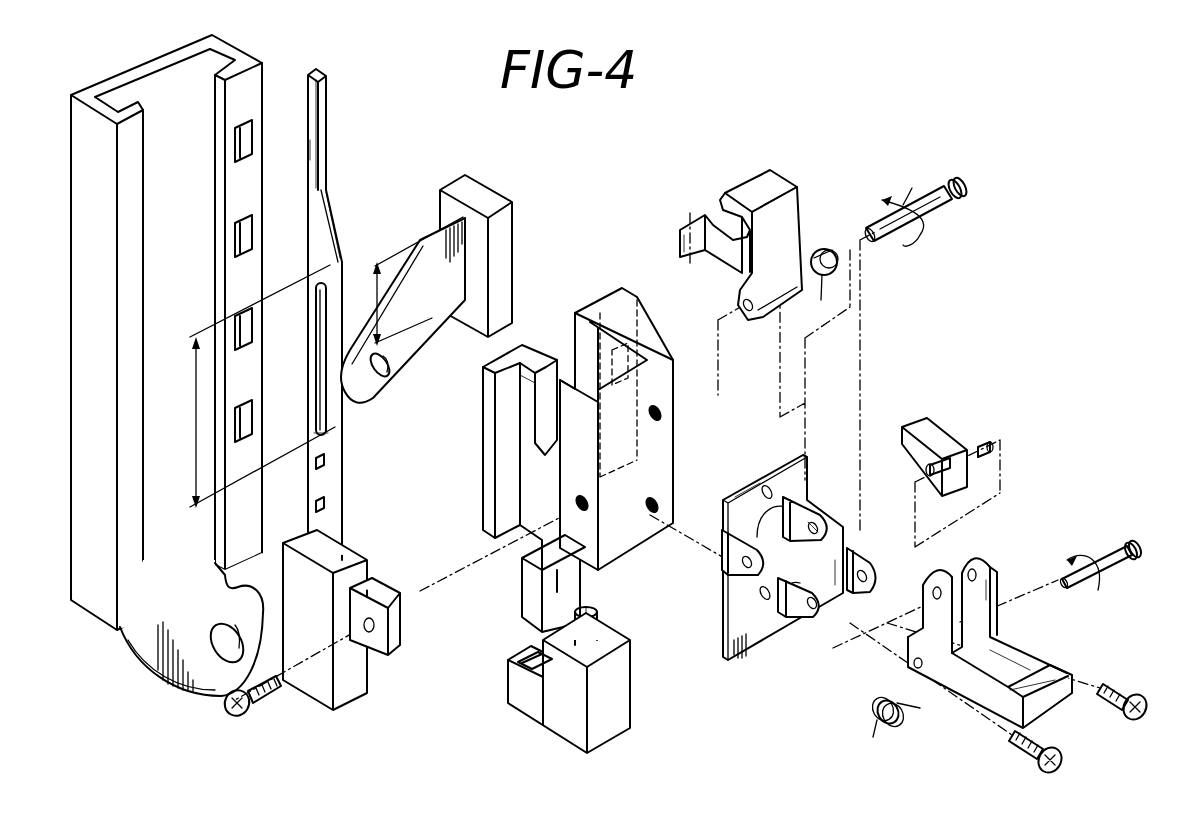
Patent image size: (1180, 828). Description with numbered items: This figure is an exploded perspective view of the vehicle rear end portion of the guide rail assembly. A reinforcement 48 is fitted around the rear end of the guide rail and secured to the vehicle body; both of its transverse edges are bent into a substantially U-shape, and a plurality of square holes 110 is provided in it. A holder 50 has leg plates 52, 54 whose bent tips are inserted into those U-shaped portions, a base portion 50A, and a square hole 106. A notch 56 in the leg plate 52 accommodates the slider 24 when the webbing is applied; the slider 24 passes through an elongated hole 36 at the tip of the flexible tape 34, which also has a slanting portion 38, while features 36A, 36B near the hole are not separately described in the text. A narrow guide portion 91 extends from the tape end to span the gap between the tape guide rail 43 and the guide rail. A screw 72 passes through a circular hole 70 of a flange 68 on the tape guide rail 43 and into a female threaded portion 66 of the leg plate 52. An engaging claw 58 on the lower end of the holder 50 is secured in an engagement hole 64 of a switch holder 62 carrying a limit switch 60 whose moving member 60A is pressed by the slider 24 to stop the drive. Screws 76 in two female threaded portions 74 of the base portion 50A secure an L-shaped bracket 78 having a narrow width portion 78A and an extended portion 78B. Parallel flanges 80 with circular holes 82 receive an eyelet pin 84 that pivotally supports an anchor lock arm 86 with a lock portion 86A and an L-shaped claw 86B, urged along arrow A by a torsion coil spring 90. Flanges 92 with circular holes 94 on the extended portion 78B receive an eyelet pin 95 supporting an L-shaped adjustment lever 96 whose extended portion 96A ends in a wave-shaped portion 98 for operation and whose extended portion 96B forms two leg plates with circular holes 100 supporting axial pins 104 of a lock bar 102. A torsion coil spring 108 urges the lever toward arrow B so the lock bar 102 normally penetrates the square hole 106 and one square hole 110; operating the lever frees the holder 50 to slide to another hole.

The slider 24 is at (480, 186).
The flexible tape 34 is at (337, 314).
The elongated hole 36 is at (320, 327).
The slot end 36A is at (327, 425).
The bend 36B is at (333, 283).
The slanting portion 38 is at (330, 205).
The tape guide rail 43 is at (280, 590).
The reinforcement 48 is at (189, 332).
The holder 50 is at (651, 413).
The base portion 50A is at (668, 403).
The leg plate 52 is at (514, 441).
The leg plate 54 is at (630, 330).
The notch 56 is at (535, 400).
The engaging claw 58 is at (522, 601).
The limit switch 60 is at (617, 613).
The moving member 60A is at (588, 608).
The switch holder 62 is at (570, 667).
The engagement hole 64 is at (510, 681).
The female threaded portion 66 is at (565, 491).
The flange 68 is at (382, 628).
The circular hole 70 is at (371, 632).
The screw 72 is at (265, 702).
The female threaded portions 74 is at (660, 416).
The screws 76 is at (1138, 698).
The bracket 78 is at (791, 556).
The narrow width portion 78A is at (742, 498).
The extended portion 78B is at (845, 535).
The flanges 80 is at (815, 500).
The circular holes 82 is at (813, 537).
The eyelet pin 84 is at (940, 203).
The anchor lock arm 86 is at (741, 227).
The lock portion 86A is at (747, 187).
The claw 86B is at (688, 223).
The torsion coil spring 90 is at (826, 249).
The guide portion 91 is at (310, 150).
The flanges 92 is at (787, 617).
The circular holes 94 is at (875, 568).
The eyelet pin 95 is at (1120, 553).
The adjustment lever 96 is at (990, 624).
The extended portion 96A is at (1030, 662).
The extended portion 96B is at (988, 572).
The wave-shaped portion 98 is at (1055, 678).
The circular holes 100 is at (933, 594).
The lock bar 102 is at (945, 432).
The axial pins 104 is at (988, 445).
The square hole 106 is at (630, 357).
The torsion coil spring 108 is at (878, 725).
The square holes 110 is at (248, 137).